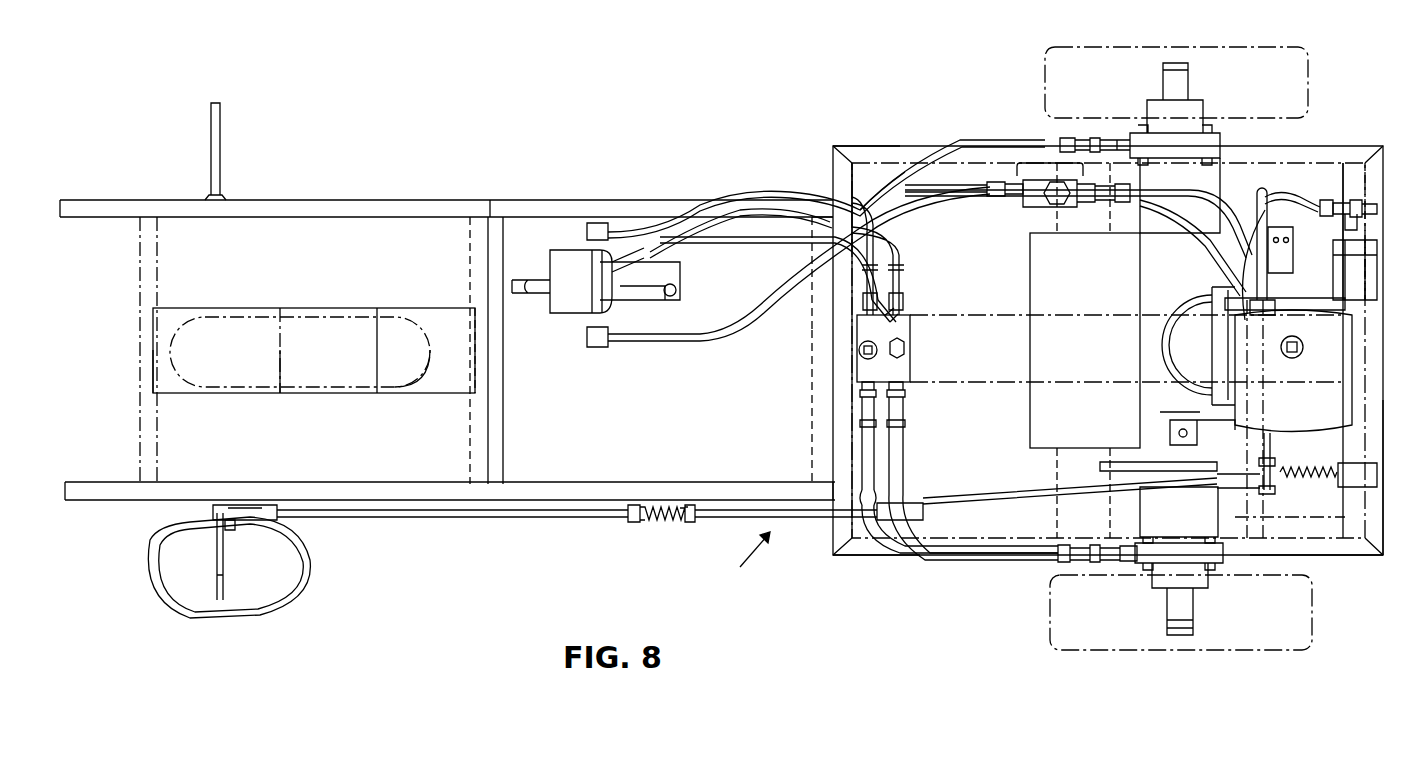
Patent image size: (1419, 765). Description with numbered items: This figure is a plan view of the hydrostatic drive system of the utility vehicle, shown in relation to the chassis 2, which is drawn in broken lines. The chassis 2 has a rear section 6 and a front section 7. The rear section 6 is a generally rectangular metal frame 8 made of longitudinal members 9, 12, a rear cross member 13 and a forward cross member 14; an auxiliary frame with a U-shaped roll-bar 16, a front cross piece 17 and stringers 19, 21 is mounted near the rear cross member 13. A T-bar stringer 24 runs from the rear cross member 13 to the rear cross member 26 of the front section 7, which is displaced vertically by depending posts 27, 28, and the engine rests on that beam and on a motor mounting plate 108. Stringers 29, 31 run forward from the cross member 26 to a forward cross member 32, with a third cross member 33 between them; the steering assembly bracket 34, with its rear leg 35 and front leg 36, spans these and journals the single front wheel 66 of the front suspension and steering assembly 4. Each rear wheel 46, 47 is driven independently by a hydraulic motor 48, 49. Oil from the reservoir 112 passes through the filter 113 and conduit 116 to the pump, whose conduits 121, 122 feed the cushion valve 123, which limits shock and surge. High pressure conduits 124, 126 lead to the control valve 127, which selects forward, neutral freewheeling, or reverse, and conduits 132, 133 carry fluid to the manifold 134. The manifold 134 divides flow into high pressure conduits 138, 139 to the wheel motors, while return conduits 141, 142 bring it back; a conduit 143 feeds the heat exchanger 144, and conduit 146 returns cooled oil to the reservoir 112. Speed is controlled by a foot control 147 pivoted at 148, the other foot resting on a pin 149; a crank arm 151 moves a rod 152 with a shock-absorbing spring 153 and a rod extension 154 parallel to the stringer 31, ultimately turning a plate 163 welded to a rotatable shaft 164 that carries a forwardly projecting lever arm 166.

The chassis 2 is at (748, 558).
The front suspension and steering assembly 4 is at (256, 303).
The rear section 6 is at (830, 146).
The front section 7 is at (312, 198).
The metal frame 8 is at (862, 150).
The longitudinal member 9 is at (868, 555).
The longitudinal member 12 is at (892, 150).
The rear cross member 13 is at (1372, 165).
The forward cross member 14 is at (847, 182).
The U-shaped roll-bar 16 is at (1375, 510).
The front cross piece 17 is at (1258, 505).
The stringer 19 is at (1320, 540).
The stringer 21 is at (1315, 170).
The stringer 24 is at (975, 320).
The rear cross member 26 is at (812, 420).
The post 27 is at (823, 490).
The post 28 is at (835, 200).
The stringer 29 is at (545, 200).
The stringer 31 is at (652, 480).
The forward cross member 32 is at (160, 262).
The third cross member 33 is at (485, 448).
The steering assembly bracket 34 is at (450, 326).
The rear leg 35 is at (440, 392).
The front leg 36 is at (172, 392).
The wheel 46 is at (1050, 615).
The wheel 47 is at (1045, 82).
The hydraulic motor 48 is at (1161, 548).
The hydraulic motor 49 is at (1140, 148).
The front wheel 66 is at (250, 387).
The motor mounting plate 108 is at (1085, 385).
The reservoir 112 is at (1288, 418).
The filter 113 is at (1268, 247).
The conduit 116 is at (1163, 350).
The conduit 121 is at (1205, 193).
The conduit 122 is at (1210, 222).
The cushion valve 123 is at (1038, 202).
The high pressure conduit 124 is at (765, 232).
The high pressure conduit 126 is at (718, 322).
The control valve 127 is at (568, 315).
The conduit 132 is at (670, 225).
The conduit 133 is at (685, 252).
The manifold 134 is at (912, 365).
The high pressure conduit 138 is at (880, 170).
The high pressure conduit 139 is at (870, 450).
The return conduit 141 is at (905, 184).
The return conduit 142 is at (897, 462).
The conduit 143 is at (1362, 210).
The heat exchanger 144 is at (1370, 275).
The conduit 146 is at (1320, 225).
The foot control 147 is at (272, 605).
The pivot 148 is at (236, 532).
The pin 149 is at (218, 155).
The crank arm 151 is at (232, 505).
The rod 152 is at (484, 518).
The spring 153 is at (650, 524).
The rod extension 154 is at (803, 518).
The plate 163 is at (1278, 470).
The rotatable shaft 164 is at (1272, 452).
The lever arm 166 is at (1210, 425).